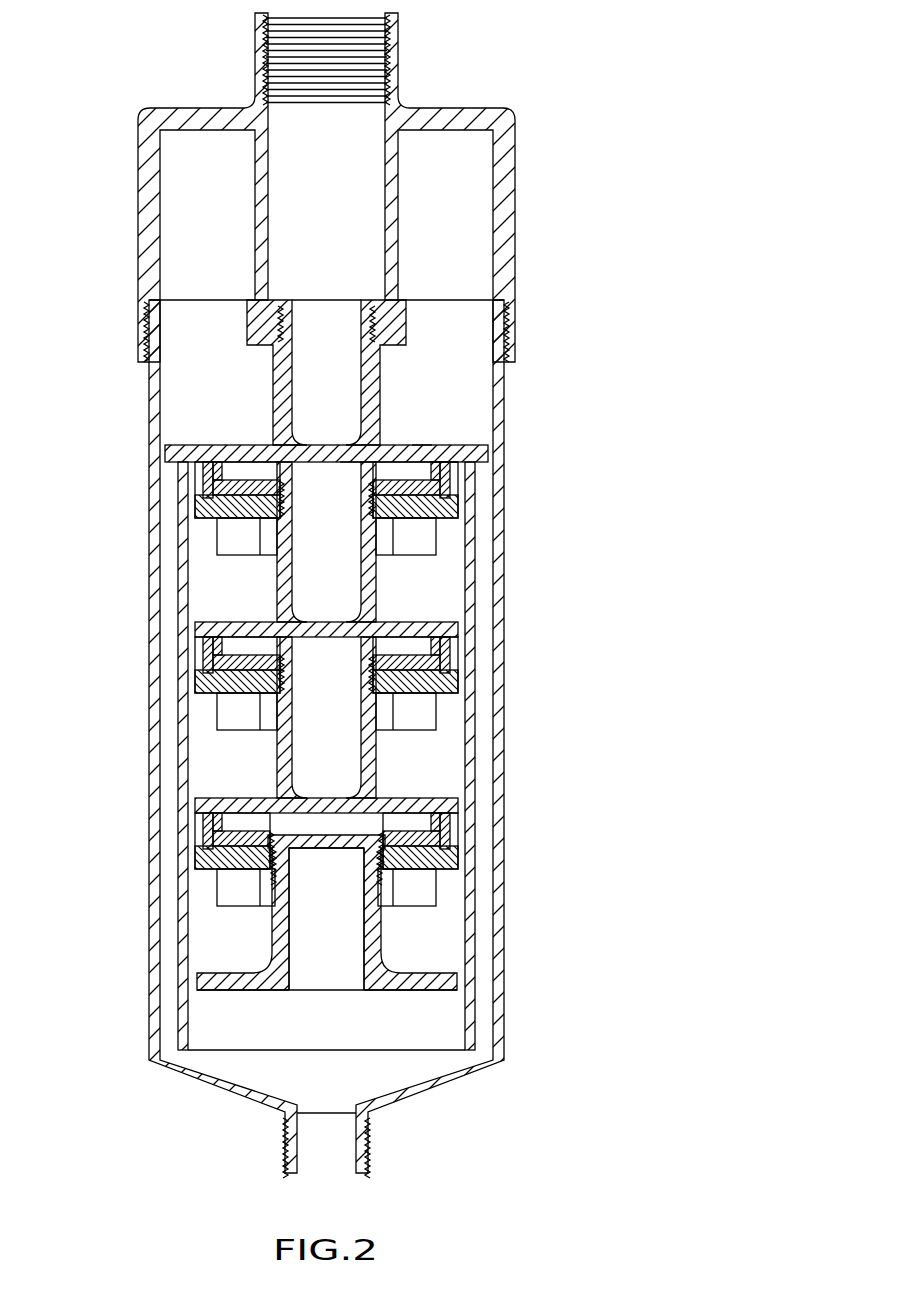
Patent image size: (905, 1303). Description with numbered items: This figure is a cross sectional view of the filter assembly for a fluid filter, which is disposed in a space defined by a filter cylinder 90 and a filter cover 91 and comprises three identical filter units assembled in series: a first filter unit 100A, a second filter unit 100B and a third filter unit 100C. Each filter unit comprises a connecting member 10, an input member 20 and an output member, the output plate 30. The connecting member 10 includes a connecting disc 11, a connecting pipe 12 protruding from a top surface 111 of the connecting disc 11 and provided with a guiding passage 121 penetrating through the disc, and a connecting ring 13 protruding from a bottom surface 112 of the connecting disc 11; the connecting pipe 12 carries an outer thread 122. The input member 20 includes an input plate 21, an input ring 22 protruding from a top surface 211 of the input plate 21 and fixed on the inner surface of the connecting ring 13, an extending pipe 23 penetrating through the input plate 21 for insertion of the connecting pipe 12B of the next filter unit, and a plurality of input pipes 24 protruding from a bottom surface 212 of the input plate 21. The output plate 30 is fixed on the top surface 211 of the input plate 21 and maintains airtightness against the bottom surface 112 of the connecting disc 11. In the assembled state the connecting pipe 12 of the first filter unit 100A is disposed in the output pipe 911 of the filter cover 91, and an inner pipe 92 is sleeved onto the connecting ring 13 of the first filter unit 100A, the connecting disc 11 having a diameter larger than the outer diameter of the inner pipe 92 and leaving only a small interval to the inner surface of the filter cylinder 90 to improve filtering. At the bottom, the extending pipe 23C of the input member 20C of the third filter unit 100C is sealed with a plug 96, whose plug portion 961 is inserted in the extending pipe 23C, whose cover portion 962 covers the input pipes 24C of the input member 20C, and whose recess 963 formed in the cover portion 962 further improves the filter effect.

The connecting member 10 is at (397, 442).
The connecting disc 11 is at (477, 450).
The top surface 111 is at (423, 443).
The bottom surface 112 is at (350, 460).
The connecting pipe 12 is at (273, 363).
The connecting pipe 12B is at (287, 493).
The guiding passage 121 is at (332, 315).
The outer thread 122 is at (277, 320).
The connecting ring 13 is at (455, 483).
The input member 20 is at (462, 510).
The input plate 21 is at (207, 510).
The top surface 211 is at (243, 495).
The bottom surface 212 is at (430, 530).
The input ring 22 is at (203, 467).
The extending pipe 23 is at (268, 478).
The input pipes 24 is at (427, 553).
The output plate 30 is at (240, 483).
The filter cylinder 90 is at (498, 390).
The filter cover 91 is at (472, 118).
The output pipe 911 is at (253, 308).
The inner pipe 92 is at (470, 767).
The plug 96 is at (378, 935).
The plug portion 961 is at (320, 840).
The cover portion 962 is at (457, 983).
The recess 963 is at (333, 963).
The first filter unit 100A is at (317, 501).
The second filter unit 100B is at (212, 618).
The third filter unit 100C is at (325, 831).
The input member 20C is at (207, 862).
The extending pipe 23C is at (275, 830).
The input pipes 24C is at (228, 890).